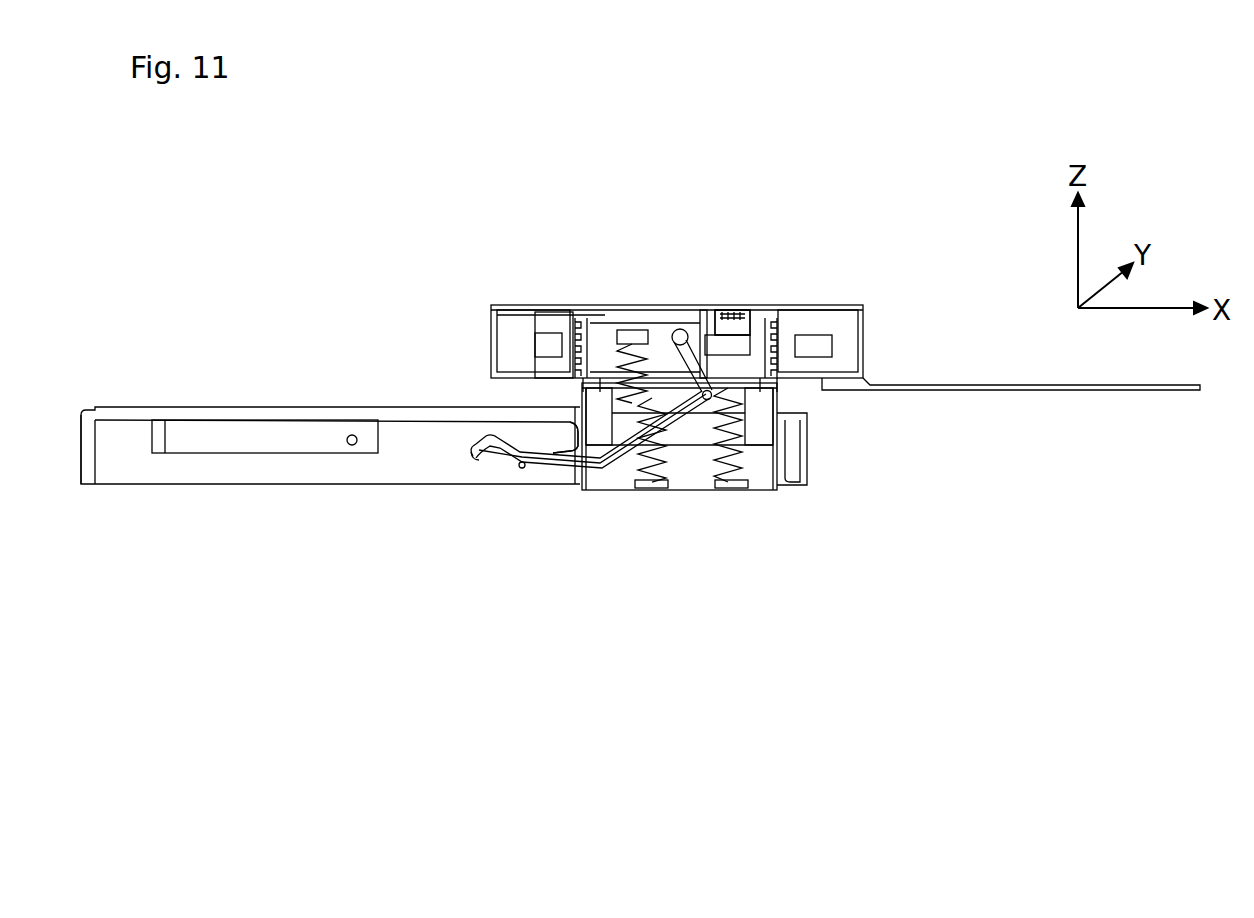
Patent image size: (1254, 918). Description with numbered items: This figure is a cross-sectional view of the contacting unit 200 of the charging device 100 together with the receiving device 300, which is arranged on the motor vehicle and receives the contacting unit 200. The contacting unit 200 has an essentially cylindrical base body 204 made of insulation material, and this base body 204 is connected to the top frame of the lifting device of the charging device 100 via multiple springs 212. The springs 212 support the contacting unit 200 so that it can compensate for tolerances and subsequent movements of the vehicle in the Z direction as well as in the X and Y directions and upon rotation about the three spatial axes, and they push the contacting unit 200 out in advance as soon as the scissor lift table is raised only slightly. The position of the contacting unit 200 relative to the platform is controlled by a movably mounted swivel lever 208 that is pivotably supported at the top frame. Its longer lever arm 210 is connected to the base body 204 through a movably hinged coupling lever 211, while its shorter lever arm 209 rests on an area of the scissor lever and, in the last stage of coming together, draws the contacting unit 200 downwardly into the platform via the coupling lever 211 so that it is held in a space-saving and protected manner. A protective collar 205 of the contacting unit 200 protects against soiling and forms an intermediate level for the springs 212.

The charging device 100 is at (247, 465).
The contacting unit 200 is at (675, 472).
The base body 204 is at (758, 330).
The protective collar 205 is at (742, 413).
The swivel lever 208 is at (540, 443).
The shorter lever arm 209 is at (522, 468).
The longer lever arm 210 is at (667, 415).
The coupling lever 211 is at (700, 388).
The springs 212 is at (742, 458).
The receiving device 300 is at (832, 343).